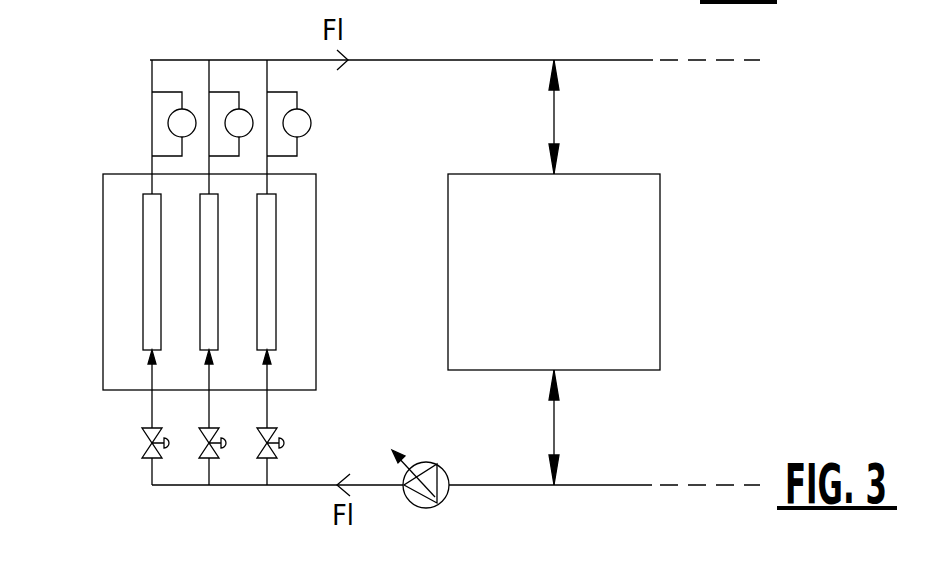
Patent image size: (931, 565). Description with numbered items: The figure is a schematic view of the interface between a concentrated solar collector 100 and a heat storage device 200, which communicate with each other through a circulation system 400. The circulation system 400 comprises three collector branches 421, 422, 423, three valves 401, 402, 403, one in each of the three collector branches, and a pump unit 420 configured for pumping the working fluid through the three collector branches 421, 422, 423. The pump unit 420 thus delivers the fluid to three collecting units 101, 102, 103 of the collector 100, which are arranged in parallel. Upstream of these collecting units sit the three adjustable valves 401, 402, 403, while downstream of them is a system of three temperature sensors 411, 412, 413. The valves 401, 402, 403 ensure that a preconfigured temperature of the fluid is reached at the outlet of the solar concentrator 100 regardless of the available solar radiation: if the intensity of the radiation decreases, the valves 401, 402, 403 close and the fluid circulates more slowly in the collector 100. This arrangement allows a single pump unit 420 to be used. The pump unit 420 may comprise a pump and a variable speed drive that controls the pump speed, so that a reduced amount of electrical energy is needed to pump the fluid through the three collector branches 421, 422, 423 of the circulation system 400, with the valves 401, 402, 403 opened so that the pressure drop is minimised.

The concentrated solar collector 100 is at (118, 174).
The collecting unit 101 is at (143, 246).
The collecting unit 102 is at (200, 301).
The collecting unit 103 is at (271, 266).
The heat storage device 200 is at (620, 174).
The circulation system 400 is at (435, 60).
The valve 401 is at (148, 437).
The valve 402 is at (212, 432).
The valve 403 is at (272, 432).
The temperature sensor 411 is at (193, 113).
The temperature sensor 412 is at (247, 110).
The temperature sensor 413 is at (303, 133).
The pump unit 420 is at (425, 462).
The collector branch 421 is at (152, 476).
The collector branch 422 is at (209, 472).
The collector branch 423 is at (267, 472).